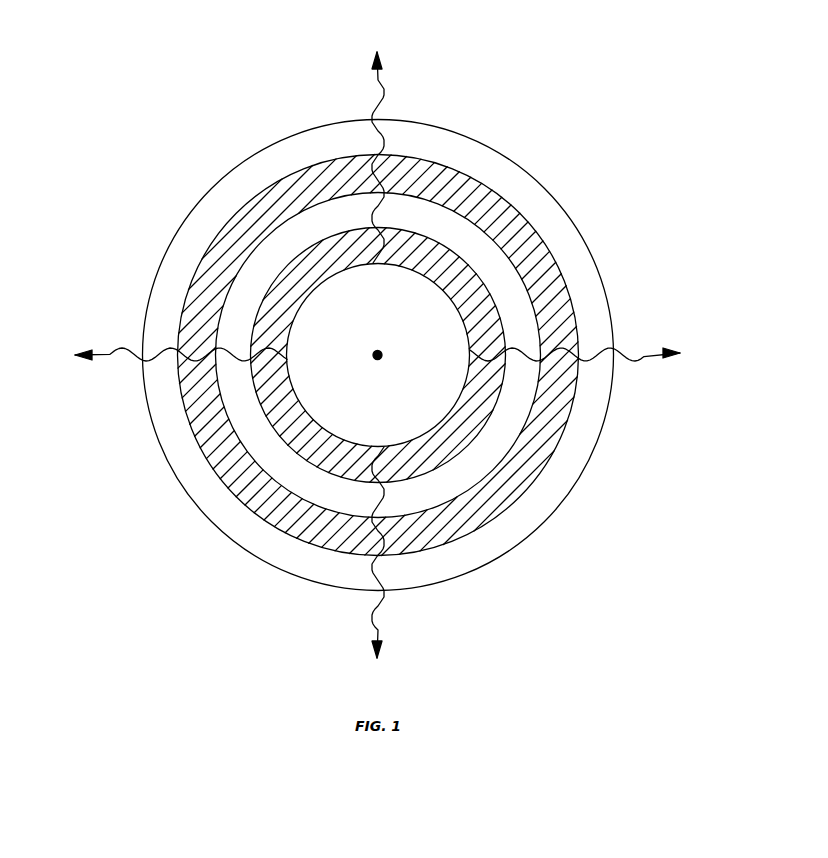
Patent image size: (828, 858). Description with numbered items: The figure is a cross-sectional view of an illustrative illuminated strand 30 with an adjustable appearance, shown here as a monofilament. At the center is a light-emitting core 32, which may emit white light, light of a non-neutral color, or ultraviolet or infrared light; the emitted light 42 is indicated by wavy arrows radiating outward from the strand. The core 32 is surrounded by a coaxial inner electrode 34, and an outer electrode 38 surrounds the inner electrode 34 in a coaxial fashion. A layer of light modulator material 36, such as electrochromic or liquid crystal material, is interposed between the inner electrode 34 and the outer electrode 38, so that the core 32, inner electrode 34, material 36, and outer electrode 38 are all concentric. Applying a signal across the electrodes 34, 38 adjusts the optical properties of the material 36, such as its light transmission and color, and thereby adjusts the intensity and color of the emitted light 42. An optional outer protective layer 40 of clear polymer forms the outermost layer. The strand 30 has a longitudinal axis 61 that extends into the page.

The strand 30 is at (377, 336).
The light-emitting core 32 is at (438, 326).
The inner electrode 34 is at (460, 281).
The light modulator material 36 is at (477, 245).
The outer electrode 38 is at (490, 208).
The outer protective layer 40 is at (497, 174).
The light 42 is at (383, 90).
The longitudinal axis 61 is at (382, 355).